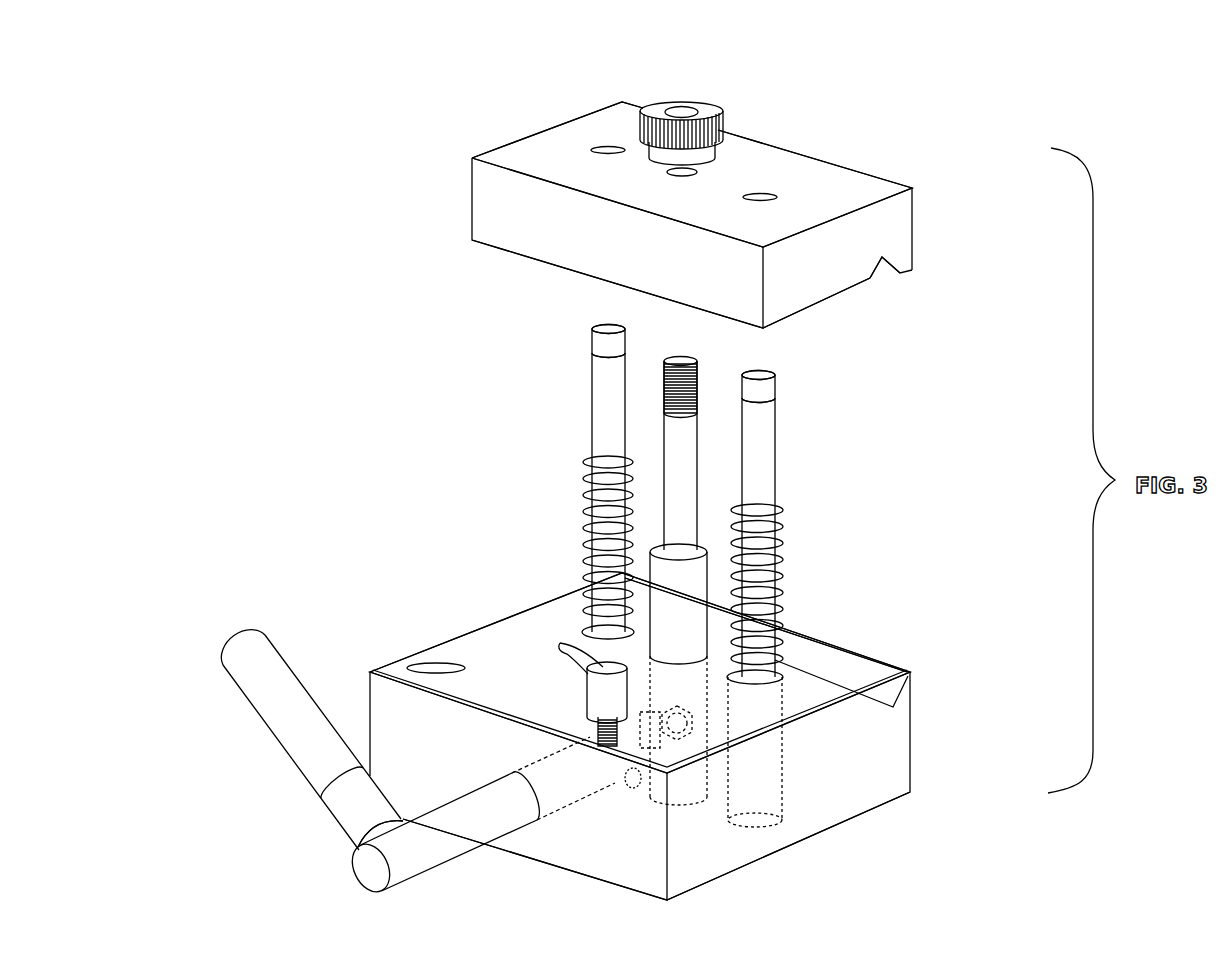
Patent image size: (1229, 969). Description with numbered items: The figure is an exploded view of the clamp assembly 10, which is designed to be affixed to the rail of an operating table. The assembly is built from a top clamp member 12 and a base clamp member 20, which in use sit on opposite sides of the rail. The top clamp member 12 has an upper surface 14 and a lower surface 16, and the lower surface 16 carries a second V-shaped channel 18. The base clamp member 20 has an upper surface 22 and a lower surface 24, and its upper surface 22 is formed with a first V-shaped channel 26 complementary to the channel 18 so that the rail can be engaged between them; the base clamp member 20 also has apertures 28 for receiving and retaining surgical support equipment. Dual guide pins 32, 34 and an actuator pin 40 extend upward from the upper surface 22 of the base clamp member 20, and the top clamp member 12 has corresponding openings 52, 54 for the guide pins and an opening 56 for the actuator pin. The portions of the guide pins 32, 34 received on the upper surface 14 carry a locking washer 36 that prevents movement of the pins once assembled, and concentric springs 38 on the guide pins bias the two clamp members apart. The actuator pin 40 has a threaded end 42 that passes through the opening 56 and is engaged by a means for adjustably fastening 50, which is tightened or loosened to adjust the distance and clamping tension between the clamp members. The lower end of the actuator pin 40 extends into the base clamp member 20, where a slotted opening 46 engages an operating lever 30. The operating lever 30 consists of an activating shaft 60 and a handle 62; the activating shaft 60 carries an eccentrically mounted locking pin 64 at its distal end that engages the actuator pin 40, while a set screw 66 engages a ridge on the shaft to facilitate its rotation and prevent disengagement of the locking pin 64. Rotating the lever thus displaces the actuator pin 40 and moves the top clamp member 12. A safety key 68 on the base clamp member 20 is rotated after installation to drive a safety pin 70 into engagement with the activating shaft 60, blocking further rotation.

The clamp assembly 10 is at (283, 346).
The top clamp member 12 is at (900, 212).
The upper surface 14 is at (832, 186).
The lower surface 16 is at (833, 306).
The second V-shaped channel 18 is at (875, 280).
The base clamp member 20 is at (838, 777).
The upper surface 22 is at (505, 636).
The lower surface 24 is at (796, 850).
The first V-shaped channel 26 is at (880, 700).
The apertures 28 is at (437, 663).
The operating lever 30 is at (348, 884).
The guide pin 32 is at (600, 388).
The guide pin 34 is at (760, 447).
The locking washer 36 is at (624, 345).
The concentric springs 38 is at (592, 500).
The actuator pin 40 is at (684, 479).
The threaded end 42 is at (695, 373).
The slotted opening 46 is at (693, 718).
The means for adjustably fastening 50 is at (718, 110).
The opening 52 is at (609, 148).
The opening 54 is at (761, 196).
The opening 56 is at (685, 173).
The activating shaft 60 is at (437, 845).
The handle 62 is at (295, 727).
The locking pin 64 is at (658, 745).
The set screw 66 is at (625, 777).
The safety key 68 is at (602, 694).
The safety pin 70 is at (602, 735).